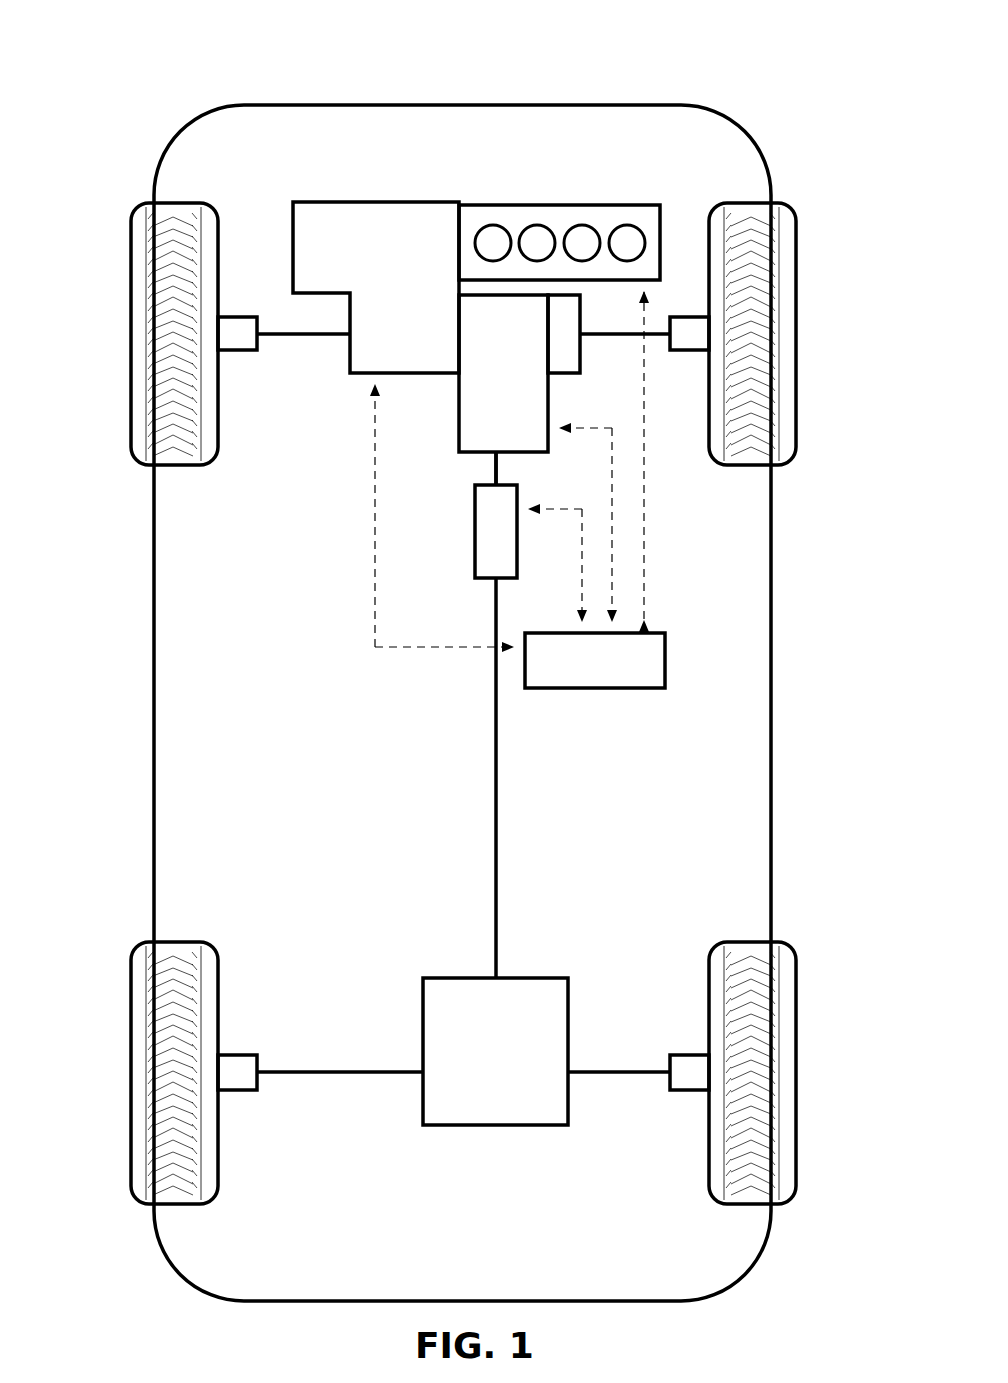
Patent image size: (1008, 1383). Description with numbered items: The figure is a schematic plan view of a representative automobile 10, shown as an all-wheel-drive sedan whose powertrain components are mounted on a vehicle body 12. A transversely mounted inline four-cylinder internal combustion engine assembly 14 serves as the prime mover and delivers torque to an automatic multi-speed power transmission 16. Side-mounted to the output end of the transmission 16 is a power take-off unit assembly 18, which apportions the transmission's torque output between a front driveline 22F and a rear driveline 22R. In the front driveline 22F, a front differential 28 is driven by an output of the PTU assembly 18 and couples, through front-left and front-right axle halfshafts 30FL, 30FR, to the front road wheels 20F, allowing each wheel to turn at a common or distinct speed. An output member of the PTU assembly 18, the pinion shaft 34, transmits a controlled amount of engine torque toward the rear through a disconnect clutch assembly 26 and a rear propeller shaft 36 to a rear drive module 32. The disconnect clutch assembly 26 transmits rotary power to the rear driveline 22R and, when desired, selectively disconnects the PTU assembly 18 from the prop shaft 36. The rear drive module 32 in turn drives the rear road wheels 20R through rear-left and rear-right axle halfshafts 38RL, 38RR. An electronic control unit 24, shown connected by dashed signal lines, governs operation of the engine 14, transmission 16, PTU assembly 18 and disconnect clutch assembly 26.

The automobile 10 is at (140, 45).
The vehicle body 12 is at (154, 575).
The internal combustion engine assembly 14 is at (603, 205).
The power transmission 16 is at (325, 202).
The power take-off unit assembly 18 is at (459, 410).
The front road wheels 20F is at (131, 243).
The rear road wheels 20R is at (131, 982).
The front driveline 22F is at (352, 500).
The rear driveline 22R is at (352, 765).
The electronic control unit 24 is at (665, 648).
The disconnect clutch assembly 26 is at (475, 565).
The front differential 28 is at (580, 360).
The front-left axle halfshaft 30FL is at (292, 336).
The front-right axle halfshaft 30FR is at (655, 336).
The rear drive module 32 is at (423, 1003).
The pinion shaft 34 is at (496, 470).
The rear propeller shaft 36 is at (495, 857).
The rear-left axle halfshaft 38RL is at (290, 1074).
The rear-right axle halfshaft 38RR is at (635, 1074).